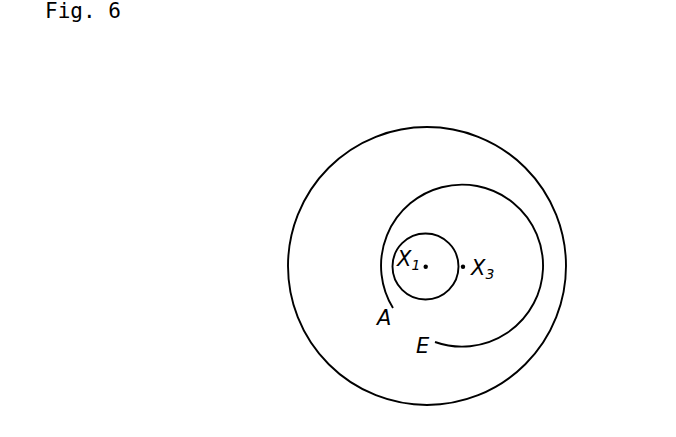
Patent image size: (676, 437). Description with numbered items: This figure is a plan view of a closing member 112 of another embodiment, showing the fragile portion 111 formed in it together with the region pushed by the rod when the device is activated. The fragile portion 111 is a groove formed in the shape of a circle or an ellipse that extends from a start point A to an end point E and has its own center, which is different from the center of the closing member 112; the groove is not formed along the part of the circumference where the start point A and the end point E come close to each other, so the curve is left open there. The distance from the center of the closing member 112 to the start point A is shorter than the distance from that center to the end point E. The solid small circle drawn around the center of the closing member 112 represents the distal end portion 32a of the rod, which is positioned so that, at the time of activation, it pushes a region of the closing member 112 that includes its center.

The distal end portion 32a is at (424, 233).
The fragile portion 111 is at (488, 203).
The closing member 112 is at (555, 280).